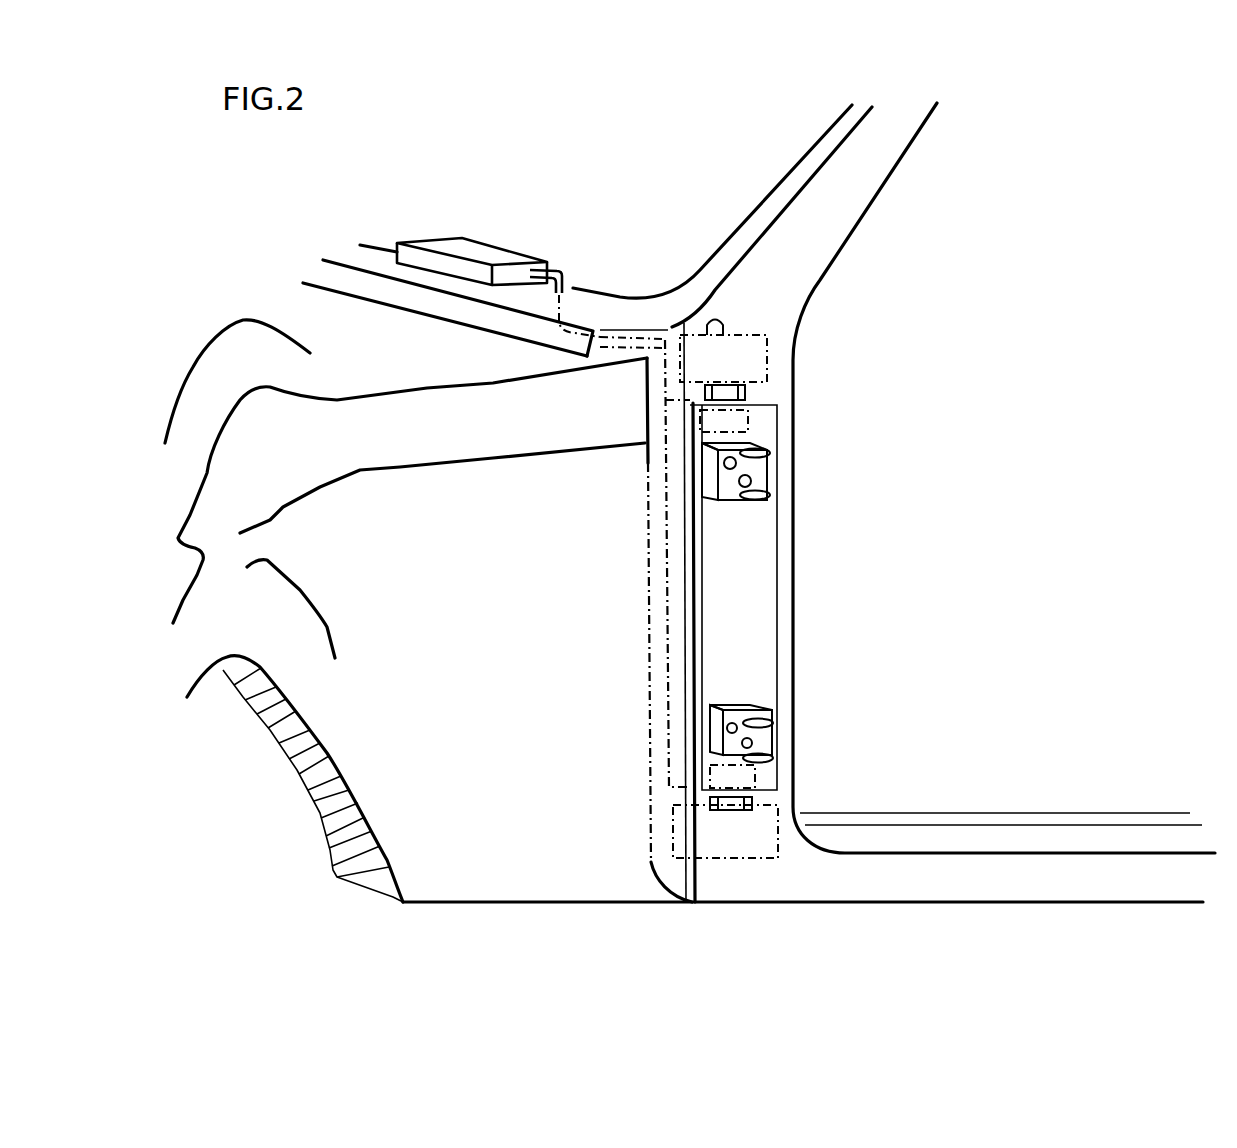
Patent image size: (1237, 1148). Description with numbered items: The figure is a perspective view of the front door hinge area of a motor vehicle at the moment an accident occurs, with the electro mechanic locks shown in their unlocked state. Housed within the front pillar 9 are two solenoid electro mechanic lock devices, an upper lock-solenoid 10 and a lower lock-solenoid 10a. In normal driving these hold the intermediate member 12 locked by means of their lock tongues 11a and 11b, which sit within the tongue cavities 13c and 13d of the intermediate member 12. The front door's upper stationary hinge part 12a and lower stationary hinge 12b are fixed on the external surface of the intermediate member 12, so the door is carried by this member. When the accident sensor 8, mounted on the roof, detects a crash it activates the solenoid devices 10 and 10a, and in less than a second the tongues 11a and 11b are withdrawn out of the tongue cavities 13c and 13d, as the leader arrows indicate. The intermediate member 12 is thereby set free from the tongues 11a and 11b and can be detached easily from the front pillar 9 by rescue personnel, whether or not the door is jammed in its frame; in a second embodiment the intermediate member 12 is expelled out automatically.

The accident sensor 8 is at (478, 242).
The front pillar 9 is at (764, 312).
The electro mechanic lock-solenoid 10 is at (724, 356).
The electro mechanic lock-solenoid 10a is at (735, 833).
The lock tongue 11a is at (707, 395).
The lock tongue 11b is at (748, 793).
The intermediate member 12 is at (735, 583).
The upper stationary hinge part 12a is at (756, 470).
The lower stationary hinge 12b is at (763, 738).
The tongue cavity 13c is at (688, 388).
The tongue cavity 13d is at (740, 805).